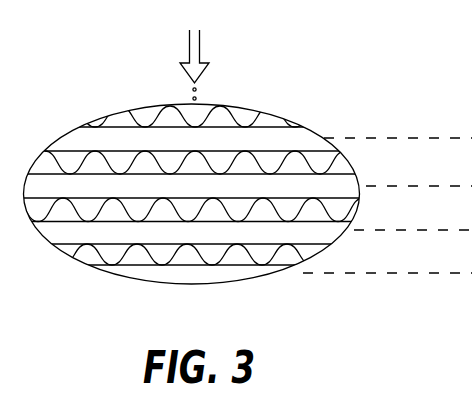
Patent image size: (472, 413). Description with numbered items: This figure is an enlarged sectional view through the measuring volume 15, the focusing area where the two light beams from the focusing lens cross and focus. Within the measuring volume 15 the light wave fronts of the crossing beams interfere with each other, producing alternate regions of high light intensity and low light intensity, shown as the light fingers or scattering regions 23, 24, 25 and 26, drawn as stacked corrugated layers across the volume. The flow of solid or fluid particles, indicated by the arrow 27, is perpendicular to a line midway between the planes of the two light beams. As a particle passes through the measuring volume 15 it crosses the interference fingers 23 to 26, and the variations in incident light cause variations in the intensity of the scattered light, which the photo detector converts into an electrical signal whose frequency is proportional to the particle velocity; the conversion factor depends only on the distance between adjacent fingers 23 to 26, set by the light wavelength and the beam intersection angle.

The measuring volume 15 is at (89, 123).
The scattering region 23 is at (289, 140).
The scattering region 24 is at (339, 187).
The scattering region 25 is at (333, 228).
The scattering region 26 is at (235, 275).
The arrow indicating particle flow 27 is at (200, 49).